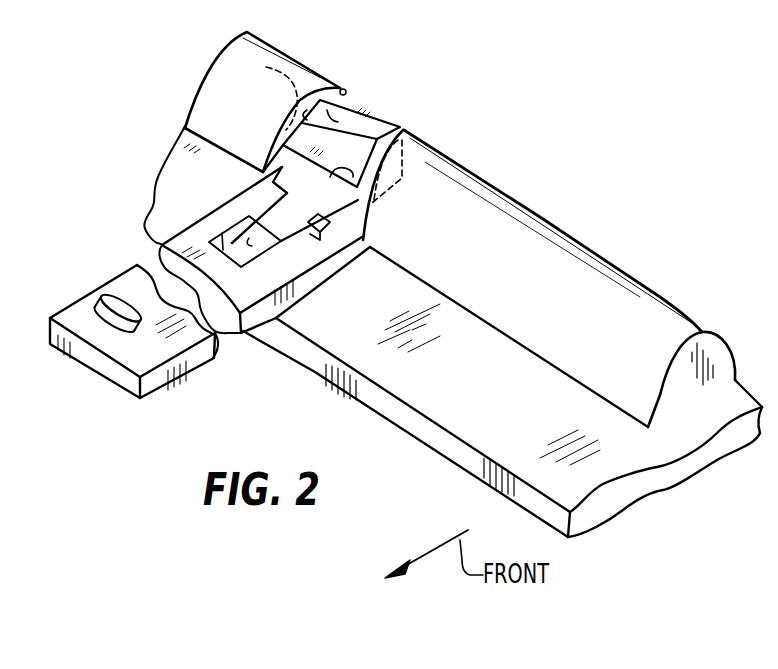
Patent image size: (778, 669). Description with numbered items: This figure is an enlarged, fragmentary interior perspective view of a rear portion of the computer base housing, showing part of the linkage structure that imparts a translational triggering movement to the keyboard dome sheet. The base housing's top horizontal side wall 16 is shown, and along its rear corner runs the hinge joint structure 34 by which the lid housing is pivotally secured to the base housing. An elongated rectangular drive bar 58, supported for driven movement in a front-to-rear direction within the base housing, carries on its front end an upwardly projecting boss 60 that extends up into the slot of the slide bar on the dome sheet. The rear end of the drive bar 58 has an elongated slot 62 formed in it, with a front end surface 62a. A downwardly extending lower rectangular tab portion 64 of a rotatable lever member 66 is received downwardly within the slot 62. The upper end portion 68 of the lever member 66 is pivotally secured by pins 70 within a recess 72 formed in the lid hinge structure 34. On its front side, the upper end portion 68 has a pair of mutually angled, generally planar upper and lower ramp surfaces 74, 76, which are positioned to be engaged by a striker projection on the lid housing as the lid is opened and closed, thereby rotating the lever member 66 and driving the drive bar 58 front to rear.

The top horizontal side wall 16 is at (505, 405).
The hinge joint structure 34 is at (617, 266).
The drive bar 58 is at (210, 352).
The boss 60 is at (120, 300).
The slot 62 is at (237, 245).
The front end surface 62a is at (229, 250).
The lower rectangular tab portion 64 is at (286, 224).
The rotatable lever member 66 is at (382, 104).
The upper end portion 68 is at (403, 128).
The pins 70 is at (274, 69).
The recess 72 is at (292, 127).
The upper ramp surface 74 is at (346, 90).
The lower ramp surface 76 is at (372, 203).